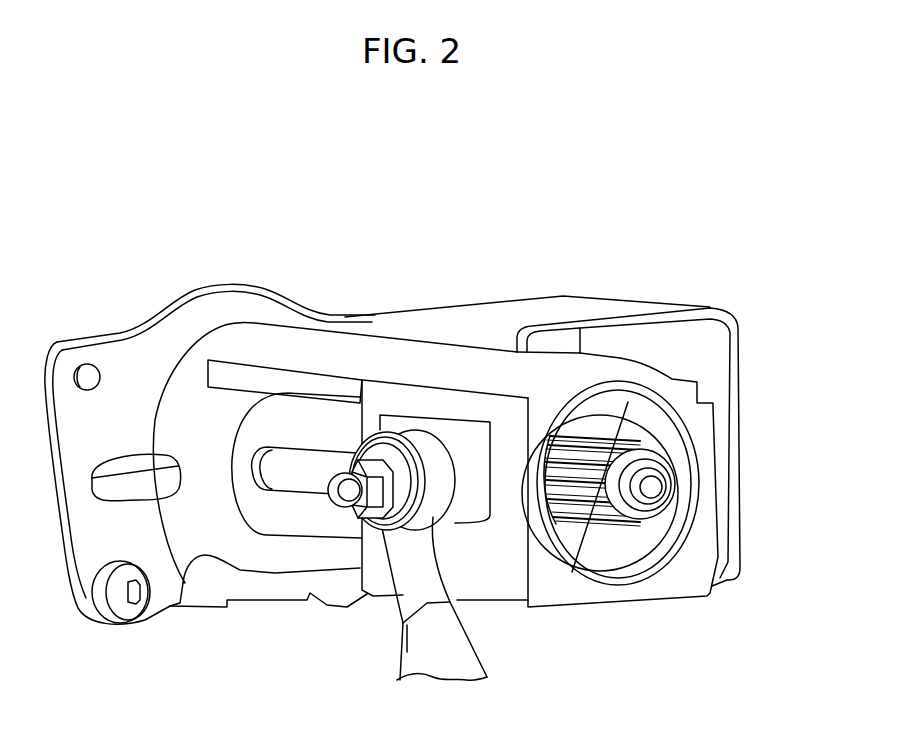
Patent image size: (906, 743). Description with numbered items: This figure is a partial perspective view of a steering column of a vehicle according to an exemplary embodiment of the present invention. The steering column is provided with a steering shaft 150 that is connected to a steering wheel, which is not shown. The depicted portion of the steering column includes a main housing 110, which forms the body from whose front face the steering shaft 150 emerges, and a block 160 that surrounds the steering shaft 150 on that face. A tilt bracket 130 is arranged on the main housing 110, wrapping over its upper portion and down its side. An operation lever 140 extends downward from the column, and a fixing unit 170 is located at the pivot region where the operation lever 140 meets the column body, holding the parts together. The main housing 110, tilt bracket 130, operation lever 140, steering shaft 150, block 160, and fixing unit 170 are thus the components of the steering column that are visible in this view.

The main housing 110 is at (553, 593).
The tilt bracket 130 is at (570, 305).
The operation lever 140 is at (408, 650).
The steering shaft 150 is at (666, 484).
The block 160 is at (618, 558).
The fixing unit 170 is at (403, 416).